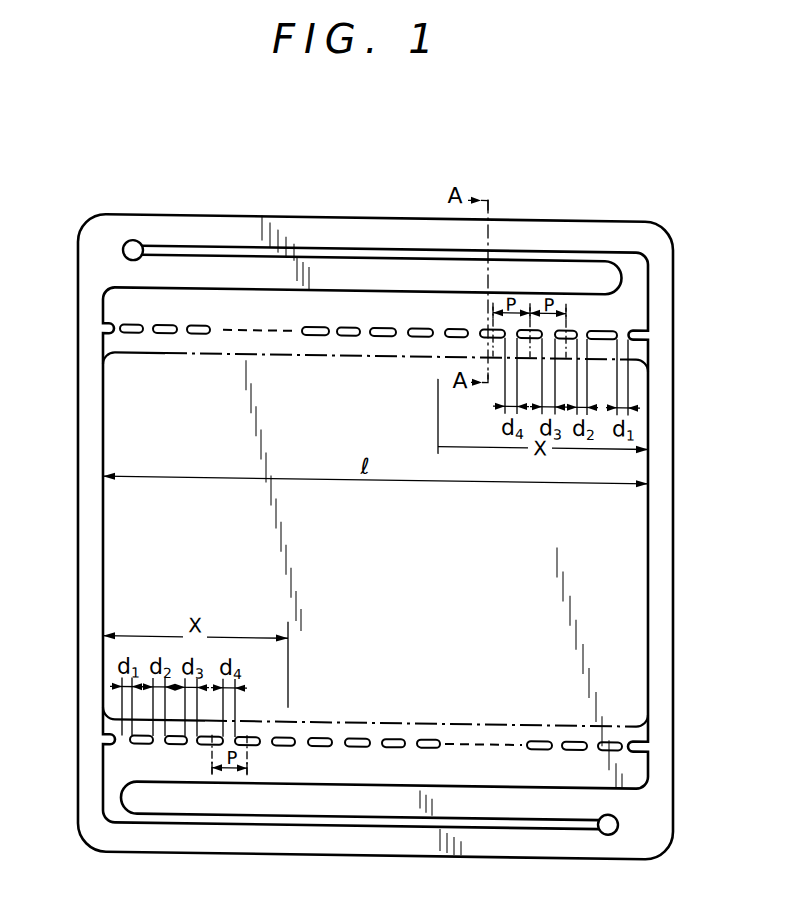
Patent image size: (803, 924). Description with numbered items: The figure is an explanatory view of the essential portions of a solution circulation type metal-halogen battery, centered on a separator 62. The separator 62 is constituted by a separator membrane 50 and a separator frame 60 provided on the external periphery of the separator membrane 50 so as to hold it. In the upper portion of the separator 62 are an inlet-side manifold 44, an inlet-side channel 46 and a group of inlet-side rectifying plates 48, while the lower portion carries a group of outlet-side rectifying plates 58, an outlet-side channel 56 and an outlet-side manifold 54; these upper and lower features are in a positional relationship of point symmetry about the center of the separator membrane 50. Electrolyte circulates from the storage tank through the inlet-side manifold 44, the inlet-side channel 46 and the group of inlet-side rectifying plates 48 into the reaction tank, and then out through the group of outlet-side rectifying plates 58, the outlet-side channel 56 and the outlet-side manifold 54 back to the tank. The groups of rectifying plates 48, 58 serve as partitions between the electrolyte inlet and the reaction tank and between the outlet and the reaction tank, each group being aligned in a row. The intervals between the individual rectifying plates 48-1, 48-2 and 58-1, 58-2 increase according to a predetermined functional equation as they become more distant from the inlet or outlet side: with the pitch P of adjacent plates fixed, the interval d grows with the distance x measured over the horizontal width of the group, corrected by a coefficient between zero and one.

The inlet-side manifold 44 is at (129, 244).
The inlet-side channel 46 is at (333, 254).
The group of inlet-side rectifying plates 48 is at (343, 338).
The inlet-side rectifying plate 48-1 is at (614, 325).
The inlet-side rectifying plate 48-2 is at (568, 325).
The separator membrane 50 is at (352, 538).
The outlet-side manifold 54 is at (606, 830).
The outlet-side channel 56 is at (330, 818).
The group of outlet-side rectifying plates 58 is at (352, 730).
The outlet-side rectifying plate 58-1 is at (133, 749).
The outlet-side rectifying plate 58-2 is at (178, 749).
The separator frame 60 is at (216, 236).
The separator 62 is at (76, 482).